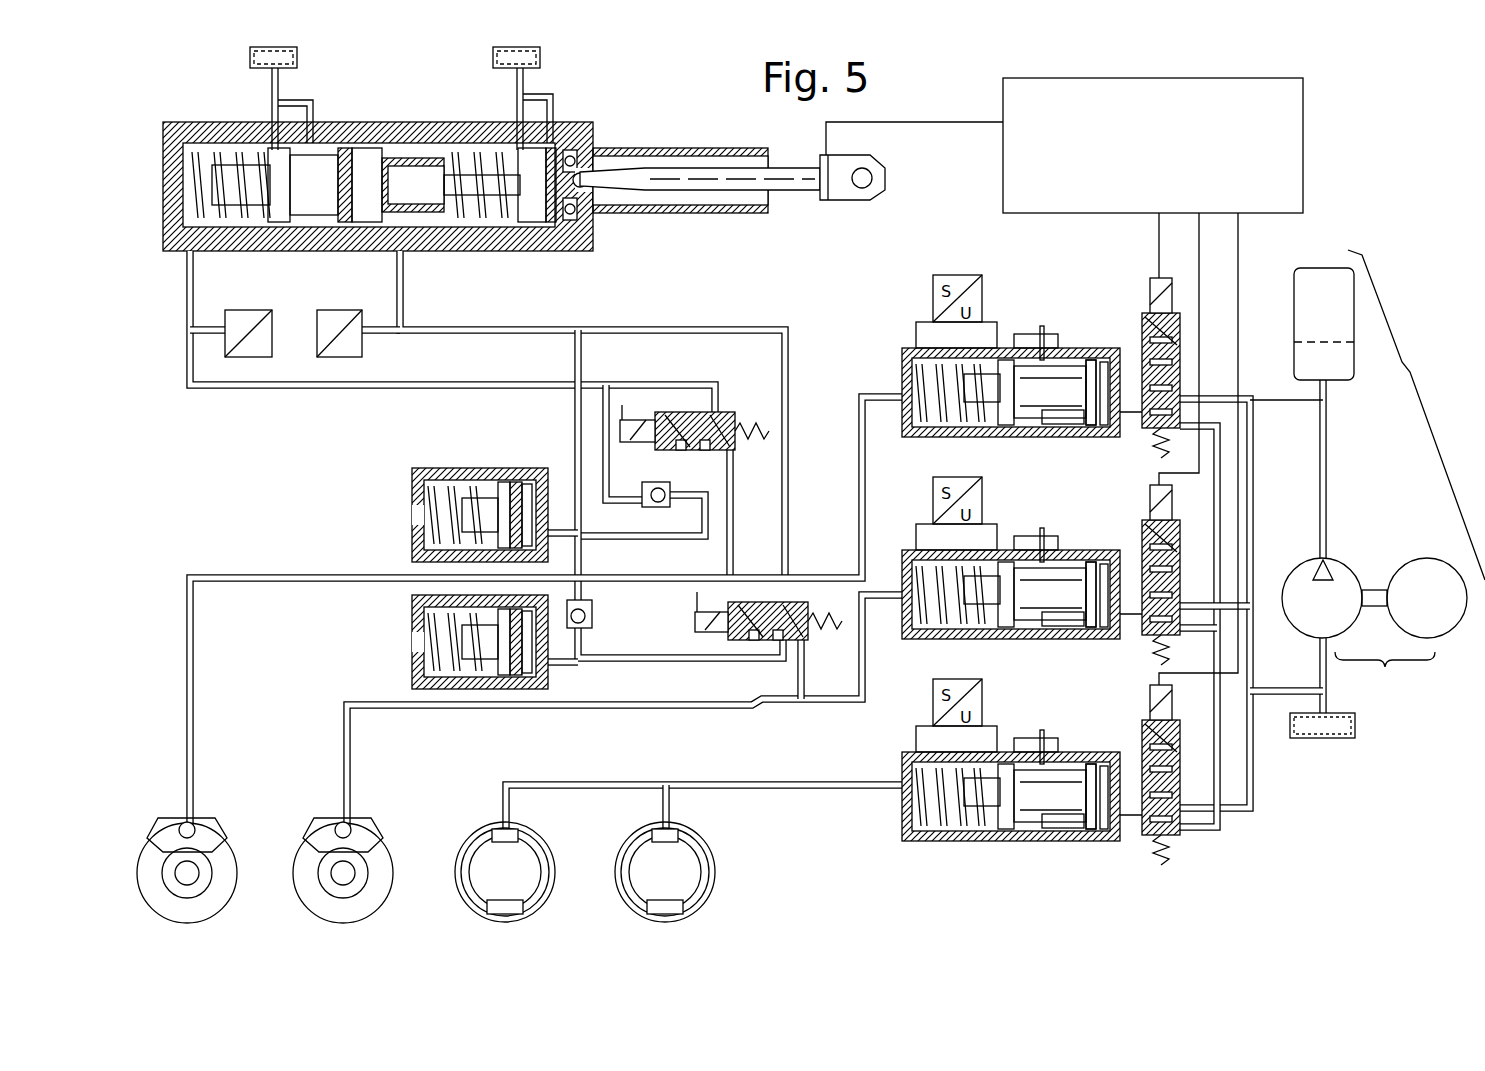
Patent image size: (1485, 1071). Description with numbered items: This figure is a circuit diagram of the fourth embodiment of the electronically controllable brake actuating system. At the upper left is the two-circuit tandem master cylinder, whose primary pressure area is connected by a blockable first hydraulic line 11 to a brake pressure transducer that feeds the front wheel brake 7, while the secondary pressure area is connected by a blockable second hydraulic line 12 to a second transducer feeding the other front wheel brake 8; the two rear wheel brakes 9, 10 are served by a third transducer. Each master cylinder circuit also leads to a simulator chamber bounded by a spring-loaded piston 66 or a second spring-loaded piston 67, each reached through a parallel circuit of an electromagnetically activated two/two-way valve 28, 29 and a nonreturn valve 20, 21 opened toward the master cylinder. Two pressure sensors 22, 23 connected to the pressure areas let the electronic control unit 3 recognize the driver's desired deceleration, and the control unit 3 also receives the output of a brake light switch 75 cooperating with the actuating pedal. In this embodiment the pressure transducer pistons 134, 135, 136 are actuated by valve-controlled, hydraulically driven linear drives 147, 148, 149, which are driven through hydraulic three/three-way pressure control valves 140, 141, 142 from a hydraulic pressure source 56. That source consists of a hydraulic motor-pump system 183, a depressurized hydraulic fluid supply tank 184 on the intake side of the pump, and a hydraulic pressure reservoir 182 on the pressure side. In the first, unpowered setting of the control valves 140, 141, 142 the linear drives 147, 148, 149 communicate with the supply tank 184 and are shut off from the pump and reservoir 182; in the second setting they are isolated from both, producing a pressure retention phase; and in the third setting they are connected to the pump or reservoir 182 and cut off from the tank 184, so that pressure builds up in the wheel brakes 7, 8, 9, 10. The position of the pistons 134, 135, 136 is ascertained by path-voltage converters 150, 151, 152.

The electronic control unit 3 is at (1278, 145).
The wheel brake 7 is at (366, 833).
The wheel brake 8 is at (210, 833).
The wheel brake 9 is at (540, 850).
The wheel brake 10 is at (695, 850).
The first hydraulic line 11 is at (790, 354).
The second hydraulic line 12 is at (472, 383).
The nonreturn valve 20 is at (593, 612).
The second nonreturn valve 21 is at (641, 504).
The pressure sensor 22 is at (345, 310).
The pressure sensor 23 is at (262, 310).
The solenoid valve 28 is at (803, 602).
The solenoid valve 29 is at (726, 410).
The hydraulic pressure source 56 is at (1416, 415).
The spring-loaded piston 66 is at (470, 650).
The second spring-loaded piston 67 is at (482, 505).
The brake light switch 75 is at (826, 205).
The pressure transducer piston 134 is at (968, 402).
The pressure transducer piston 135 is at (958, 610).
The pressure transducer piston 136 is at (962, 812).
The hydraulic 3/3-way pressure control valve 140 is at (1182, 327).
The hydraulic 3/3-way pressure control valve 141 is at (1180, 535).
The hydraulic 3/3-way pressure control valve 142 is at (1180, 833).
The hydraulic linear drive 147 is at (1093, 348).
The hydraulic linear drive 148 is at (1092, 550).
The hydraulic linear drive 149 is at (1092, 752).
The path-voltage converter 150 is at (982, 287).
The path-voltage converter 151 is at (982, 492).
The path-voltage converter 152 is at (982, 695).
The hydraulic pressure reservoir 182 is at (1343, 372).
The hydraulic motor-pump system 183 is at (1385, 668).
The hydraulic fluid supply tank 184 is at (1337, 740).